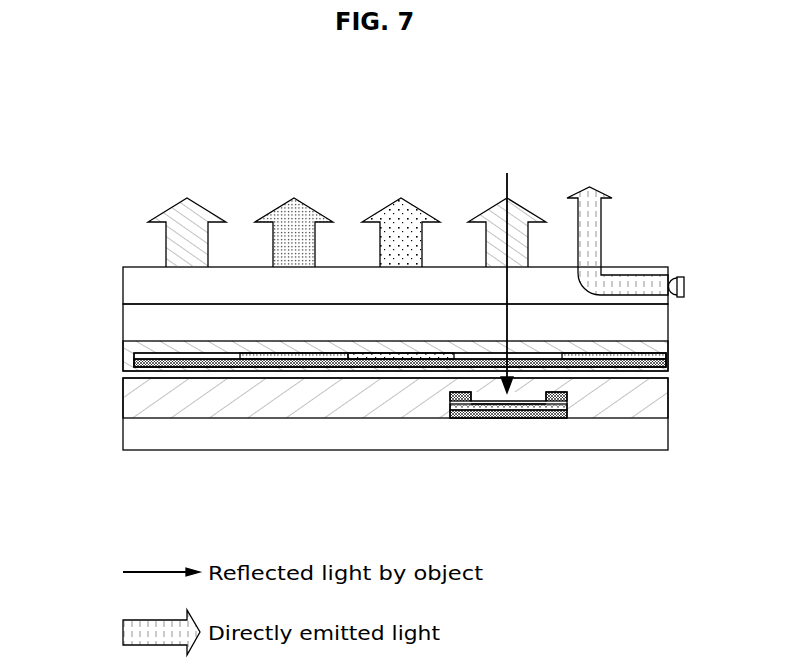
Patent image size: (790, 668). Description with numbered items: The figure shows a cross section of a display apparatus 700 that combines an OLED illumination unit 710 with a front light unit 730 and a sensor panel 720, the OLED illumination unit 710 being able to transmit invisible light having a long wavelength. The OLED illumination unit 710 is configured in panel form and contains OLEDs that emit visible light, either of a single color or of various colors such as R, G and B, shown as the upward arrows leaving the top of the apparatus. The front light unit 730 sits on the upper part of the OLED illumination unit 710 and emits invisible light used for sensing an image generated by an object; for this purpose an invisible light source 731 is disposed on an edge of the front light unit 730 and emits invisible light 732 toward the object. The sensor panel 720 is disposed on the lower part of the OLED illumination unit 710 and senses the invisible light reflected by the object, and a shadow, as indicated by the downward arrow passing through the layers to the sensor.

The display apparatus 700 is at (413, 112).
The OLED illumination unit 710 is at (116, 299).
The sensor panel 720 is at (116, 380).
The front light unit 730 is at (122, 288).
The invisible light source 731 is at (675, 276).
The invisible light 732 is at (600, 186).